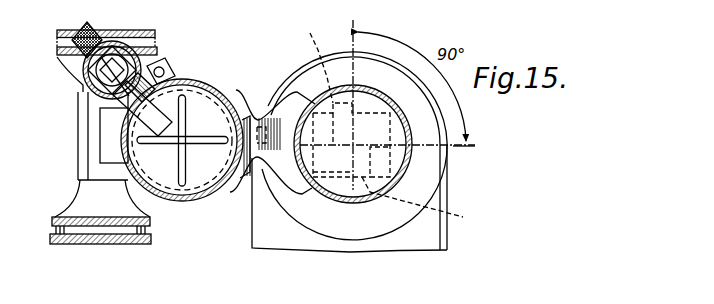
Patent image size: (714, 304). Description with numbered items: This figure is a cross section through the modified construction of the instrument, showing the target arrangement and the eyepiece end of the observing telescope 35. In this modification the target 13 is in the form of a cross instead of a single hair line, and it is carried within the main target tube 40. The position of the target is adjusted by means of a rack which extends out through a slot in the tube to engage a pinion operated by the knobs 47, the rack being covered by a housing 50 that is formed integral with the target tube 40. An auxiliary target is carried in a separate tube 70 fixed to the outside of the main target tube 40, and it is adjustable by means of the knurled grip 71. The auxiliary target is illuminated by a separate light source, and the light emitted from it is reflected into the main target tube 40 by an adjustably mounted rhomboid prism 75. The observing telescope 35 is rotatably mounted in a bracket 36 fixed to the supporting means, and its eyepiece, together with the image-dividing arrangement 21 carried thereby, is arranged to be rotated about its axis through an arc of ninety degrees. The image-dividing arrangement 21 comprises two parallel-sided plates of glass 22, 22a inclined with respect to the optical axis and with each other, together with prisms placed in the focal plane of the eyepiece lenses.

The target 13 is at (200, 163).
The image-dividing arrangement 21 is at (394, 161).
The parallel-sided plate of glass 22 is at (323, 104).
The parallel-sided plate of glass 22a is at (432, 206).
The observing telescope 35 is at (468, 128).
The bracket 36 is at (413, 242).
The target tube 40 is at (206, 82).
The knobs 47 is at (85, 244).
The housing 50 is at (108, 152).
The separate tube 70 is at (113, 36).
The knurled grip 71 is at (85, 102).
The rhomboid prism 75 is at (83, 62).